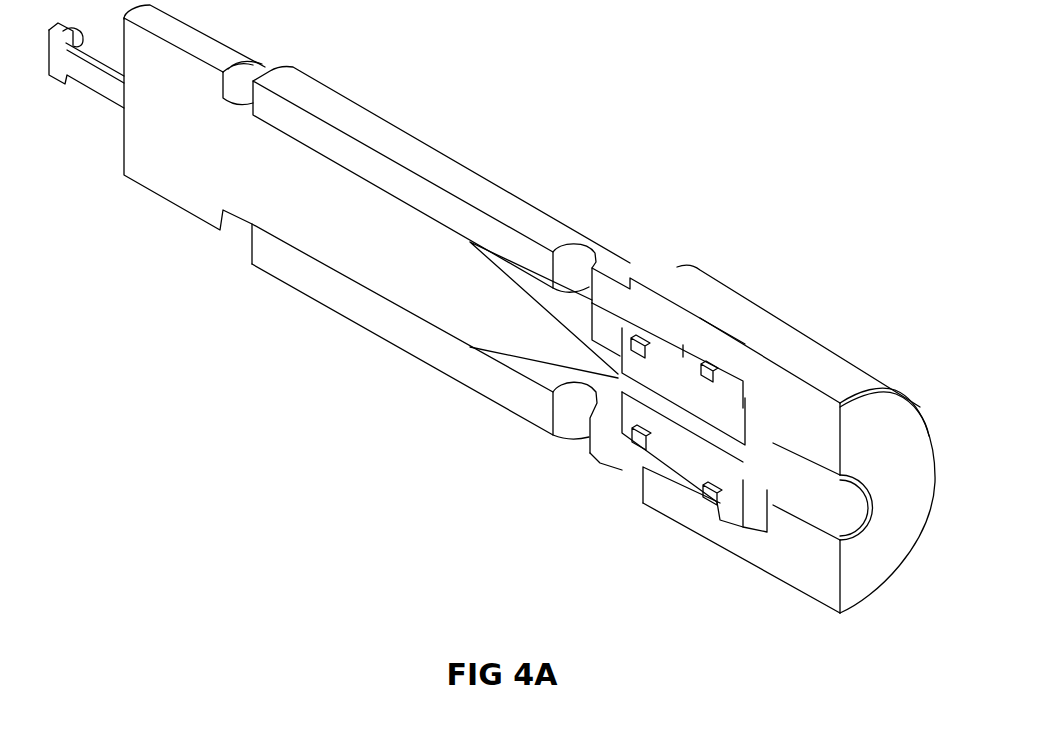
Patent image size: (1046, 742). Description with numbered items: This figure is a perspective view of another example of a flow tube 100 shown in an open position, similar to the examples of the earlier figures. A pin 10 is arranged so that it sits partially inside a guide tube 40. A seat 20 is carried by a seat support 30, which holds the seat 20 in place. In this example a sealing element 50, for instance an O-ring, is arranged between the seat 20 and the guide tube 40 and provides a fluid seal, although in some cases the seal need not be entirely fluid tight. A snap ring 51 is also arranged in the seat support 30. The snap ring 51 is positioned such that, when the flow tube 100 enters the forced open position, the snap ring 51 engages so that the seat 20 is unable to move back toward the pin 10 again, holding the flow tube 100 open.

The flow tube 100 is at (215, 390).
The pin 10 is at (168, 213).
The seat 20 is at (667, 340).
The seat support 30 is at (748, 398).
The guide tube 40 is at (387, 352).
The sealing element 50 is at (633, 443).
The snap ring 51 is at (707, 492).